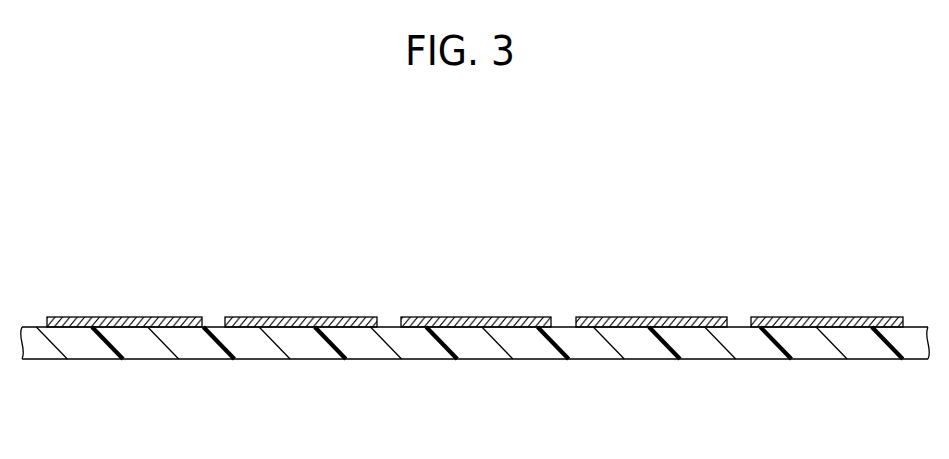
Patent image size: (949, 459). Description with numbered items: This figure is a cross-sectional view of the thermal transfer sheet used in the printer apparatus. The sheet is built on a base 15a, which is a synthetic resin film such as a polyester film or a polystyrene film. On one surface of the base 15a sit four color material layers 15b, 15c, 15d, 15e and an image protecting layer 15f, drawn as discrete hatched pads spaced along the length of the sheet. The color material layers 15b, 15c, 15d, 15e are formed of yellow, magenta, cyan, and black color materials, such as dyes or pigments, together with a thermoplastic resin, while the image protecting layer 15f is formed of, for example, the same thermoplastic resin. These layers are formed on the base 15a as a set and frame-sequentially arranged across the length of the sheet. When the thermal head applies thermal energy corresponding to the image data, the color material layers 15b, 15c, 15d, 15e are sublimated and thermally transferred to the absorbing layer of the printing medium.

The base 15a is at (90, 353).
The color material layer 15b is at (87, 317).
The color material layer 15c is at (263, 317).
The color material layer 15d is at (441, 317).
The color material layer 15e is at (618, 317).
The image protecting layer 15f is at (784, 317).